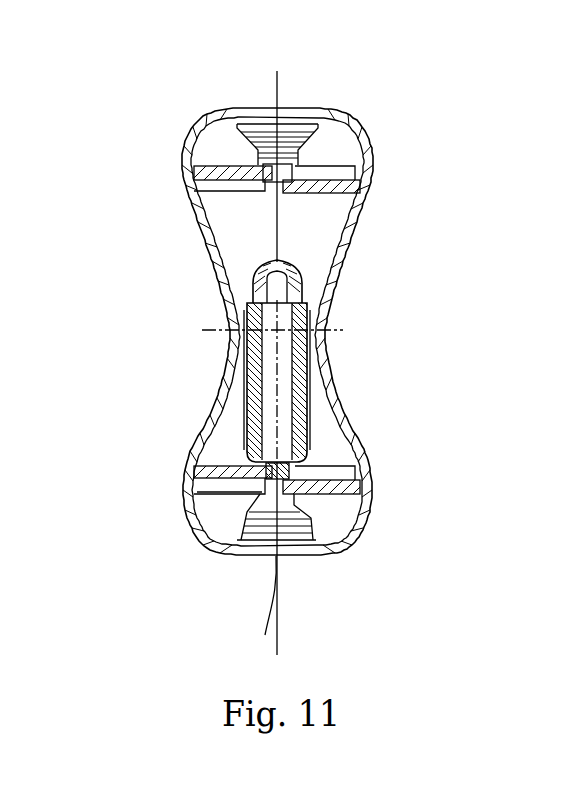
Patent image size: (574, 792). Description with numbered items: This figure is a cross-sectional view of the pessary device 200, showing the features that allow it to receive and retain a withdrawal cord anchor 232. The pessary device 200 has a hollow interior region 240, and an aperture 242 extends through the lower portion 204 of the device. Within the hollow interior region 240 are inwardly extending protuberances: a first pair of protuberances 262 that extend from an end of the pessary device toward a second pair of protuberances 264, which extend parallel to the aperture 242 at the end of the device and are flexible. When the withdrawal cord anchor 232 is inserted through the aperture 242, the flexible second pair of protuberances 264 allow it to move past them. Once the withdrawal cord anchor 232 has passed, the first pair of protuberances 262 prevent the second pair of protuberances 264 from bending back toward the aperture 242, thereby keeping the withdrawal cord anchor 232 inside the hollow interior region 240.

The pessary device 200 is at (149, 62).
The lower portion 204 is at (187, 508).
The withdrawal cord anchor 232 is at (303, 393).
The interior region 240 is at (236, 240).
The aperture 242 is at (288, 552).
The first pair of protuberances 262 is at (228, 130).
The second pair of protuberances 264 is at (207, 173).